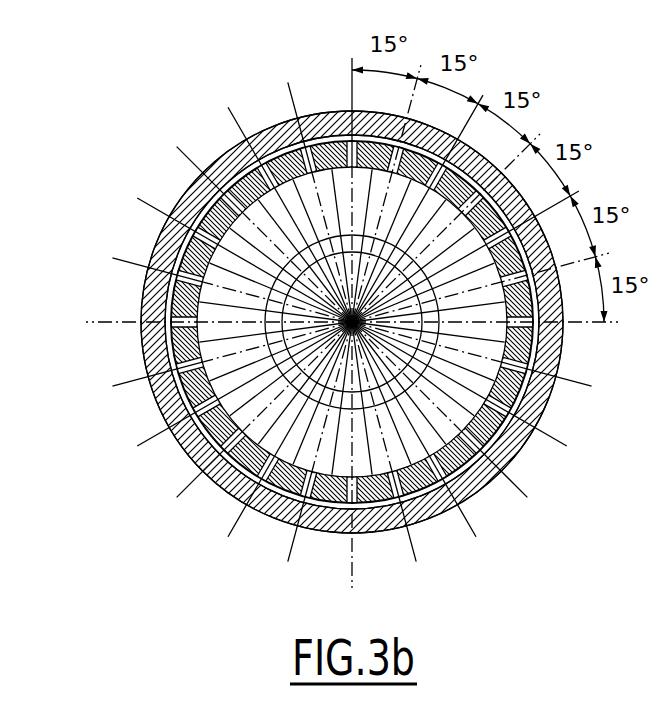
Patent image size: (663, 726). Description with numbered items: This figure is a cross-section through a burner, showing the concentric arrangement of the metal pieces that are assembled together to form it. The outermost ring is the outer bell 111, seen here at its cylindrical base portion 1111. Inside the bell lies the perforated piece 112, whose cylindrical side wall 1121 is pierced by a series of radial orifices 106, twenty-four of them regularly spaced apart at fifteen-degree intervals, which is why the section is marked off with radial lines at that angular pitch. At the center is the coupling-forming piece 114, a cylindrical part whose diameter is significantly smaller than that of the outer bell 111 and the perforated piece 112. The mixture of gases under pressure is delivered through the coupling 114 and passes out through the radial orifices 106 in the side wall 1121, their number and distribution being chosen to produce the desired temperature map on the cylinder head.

The outer bell 111 is at (133, 173).
The cylindrical base portion 1111 is at (352, 298).
The cylindrical side wall 1121 is at (304, 322).
The radial orifices 106 is at (297, 322).
The perforated piece 112 is at (352, 374).
The coupling-forming piece 114 is at (352, 291).